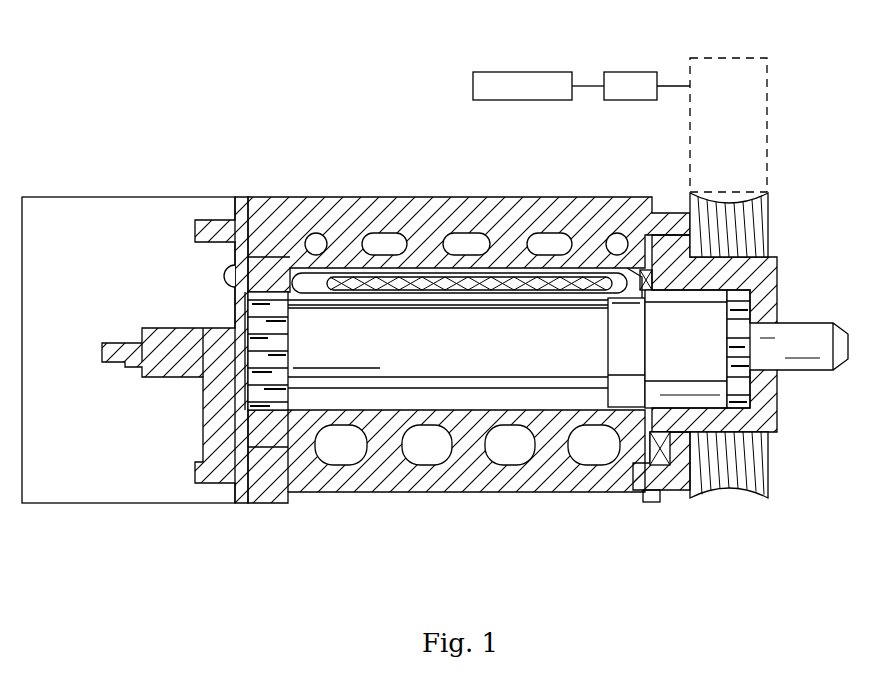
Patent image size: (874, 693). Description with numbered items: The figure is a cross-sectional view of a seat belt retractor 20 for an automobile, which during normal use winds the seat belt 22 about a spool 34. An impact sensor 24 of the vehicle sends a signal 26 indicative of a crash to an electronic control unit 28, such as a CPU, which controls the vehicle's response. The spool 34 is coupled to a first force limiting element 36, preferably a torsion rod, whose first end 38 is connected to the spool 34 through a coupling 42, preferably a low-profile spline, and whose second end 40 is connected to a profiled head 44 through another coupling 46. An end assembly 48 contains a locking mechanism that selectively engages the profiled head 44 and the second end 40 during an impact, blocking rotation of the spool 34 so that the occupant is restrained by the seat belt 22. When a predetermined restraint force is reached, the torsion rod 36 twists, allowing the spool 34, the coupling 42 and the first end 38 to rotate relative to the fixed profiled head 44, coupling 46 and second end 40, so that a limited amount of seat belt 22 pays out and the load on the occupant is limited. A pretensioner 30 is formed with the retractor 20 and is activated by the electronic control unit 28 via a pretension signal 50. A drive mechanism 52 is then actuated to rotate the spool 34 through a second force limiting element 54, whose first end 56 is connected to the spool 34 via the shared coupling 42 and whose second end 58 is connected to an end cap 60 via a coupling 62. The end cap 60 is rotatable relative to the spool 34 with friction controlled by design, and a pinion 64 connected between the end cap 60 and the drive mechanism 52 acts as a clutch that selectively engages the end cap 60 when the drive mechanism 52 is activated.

The retractor 20 is at (185, 75).
The seat belt 22 is at (360, 282).
The impact sensor 24 is at (522, 72).
The signal 26 is at (590, 86).
The electronic control unit 28 is at (632, 72).
The pretensioner 30 is at (770, 197).
The spool 34 is at (412, 215).
The first force limiting element 36 is at (487, 367).
The first end 38 is at (598, 357).
The second end 40 is at (337, 357).
The coupling 42 is at (617, 397).
The profiled head 44 is at (217, 470).
The coupling 46 is at (288, 412).
The end assembly 48 is at (60, 503).
The pretension signal 50 is at (672, 86).
The drive mechanism 52 is at (737, 125).
The second force limiting element 54 is at (718, 347).
The first end 56 is at (653, 373).
The second end 58 is at (683, 350).
The end cap 60 is at (760, 277).
The coupling 62 is at (750, 303).
The pinion 64 is at (753, 227).